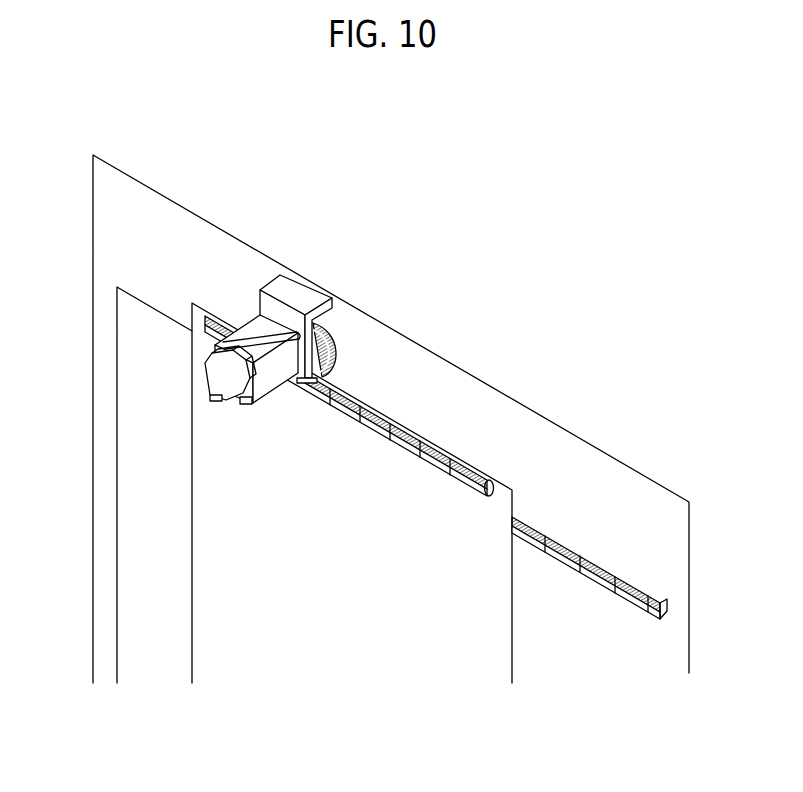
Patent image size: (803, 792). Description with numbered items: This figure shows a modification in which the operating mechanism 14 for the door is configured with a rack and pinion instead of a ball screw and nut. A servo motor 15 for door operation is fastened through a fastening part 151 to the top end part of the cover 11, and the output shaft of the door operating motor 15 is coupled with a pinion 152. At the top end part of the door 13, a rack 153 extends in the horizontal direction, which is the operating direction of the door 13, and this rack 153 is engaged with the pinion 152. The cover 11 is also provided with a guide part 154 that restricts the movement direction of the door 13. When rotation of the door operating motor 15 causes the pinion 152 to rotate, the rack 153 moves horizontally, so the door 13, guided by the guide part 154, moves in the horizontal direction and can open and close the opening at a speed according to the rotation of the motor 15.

The cover 11 is at (673, 633).
The door 13 is at (213, 428).
The operating mechanism 14 is at (321, 310).
The servo motor for door operation 15 is at (273, 376).
The fastening part 151 is at (304, 297).
The pinion 152 is at (338, 350).
The rack 153 is at (463, 458).
The guide part 154 is at (617, 573).